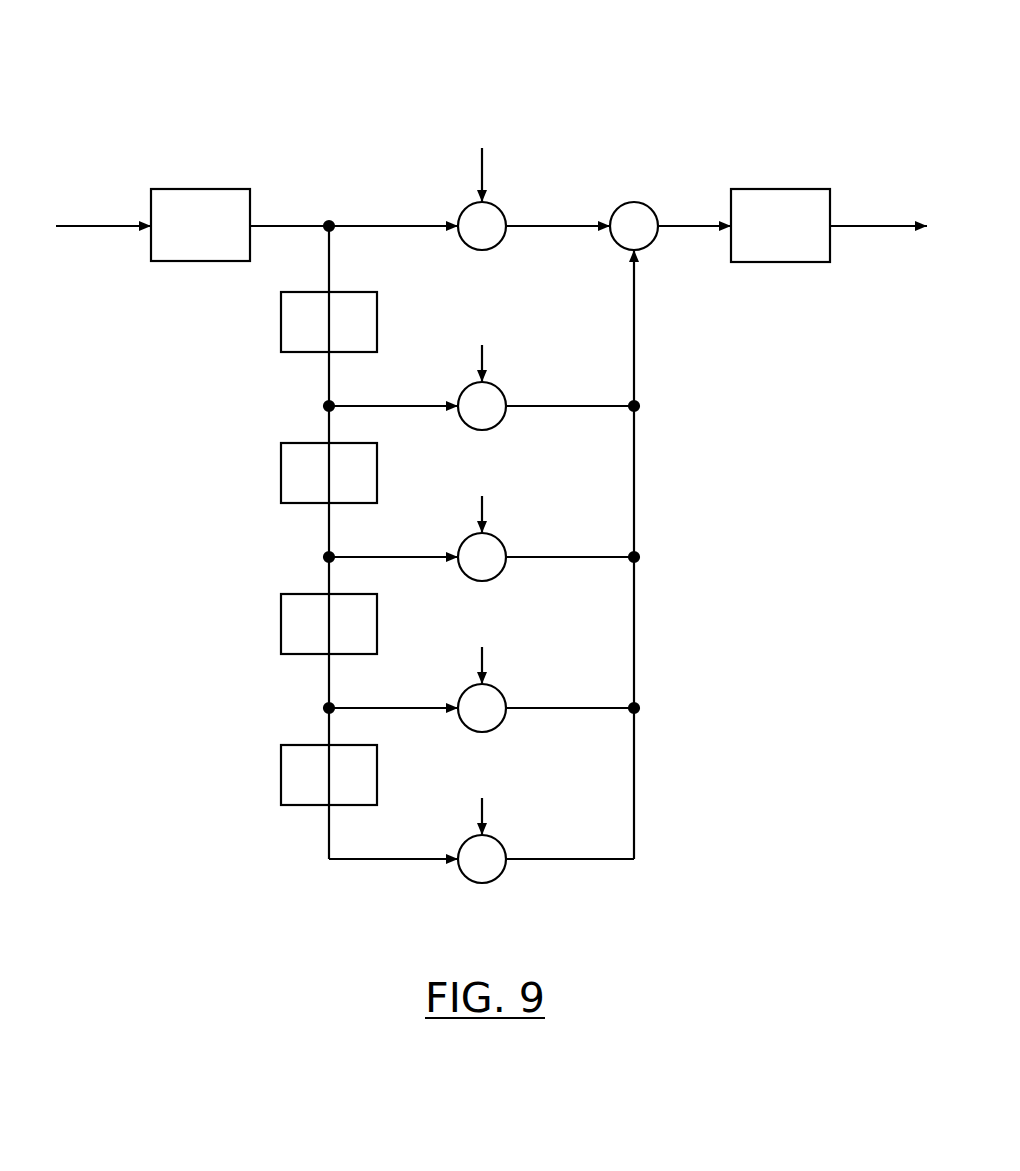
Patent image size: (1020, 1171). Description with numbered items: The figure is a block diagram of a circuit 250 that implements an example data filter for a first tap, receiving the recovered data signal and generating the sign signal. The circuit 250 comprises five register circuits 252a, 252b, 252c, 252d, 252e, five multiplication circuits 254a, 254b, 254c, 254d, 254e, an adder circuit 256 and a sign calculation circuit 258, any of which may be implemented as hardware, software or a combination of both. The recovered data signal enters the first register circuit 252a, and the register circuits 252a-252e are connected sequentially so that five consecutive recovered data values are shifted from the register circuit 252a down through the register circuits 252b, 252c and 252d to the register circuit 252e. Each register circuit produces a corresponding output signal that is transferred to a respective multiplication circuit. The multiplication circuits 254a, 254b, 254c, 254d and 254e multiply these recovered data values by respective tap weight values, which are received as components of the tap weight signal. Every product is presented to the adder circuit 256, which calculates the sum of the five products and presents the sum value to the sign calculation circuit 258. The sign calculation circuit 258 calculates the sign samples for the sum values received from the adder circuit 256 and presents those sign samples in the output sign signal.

The circuit 250 is at (447, 48).
The register circuit 252a is at (197, 189).
The register circuit 252b is at (281, 322).
The register circuit 252c is at (281, 473).
The register circuit 252d is at (281, 624).
The register circuit 252e is at (281, 775).
The multiplication circuit 254a is at (488, 249).
The multiplication circuit 254b is at (488, 429).
The multiplication circuit 254c is at (488, 580).
The multiplication circuit 254d is at (488, 731).
The multiplication circuit 254e is at (488, 882).
The adder circuit 256 is at (647, 206).
The sign calculation circuit 258 is at (782, 189).